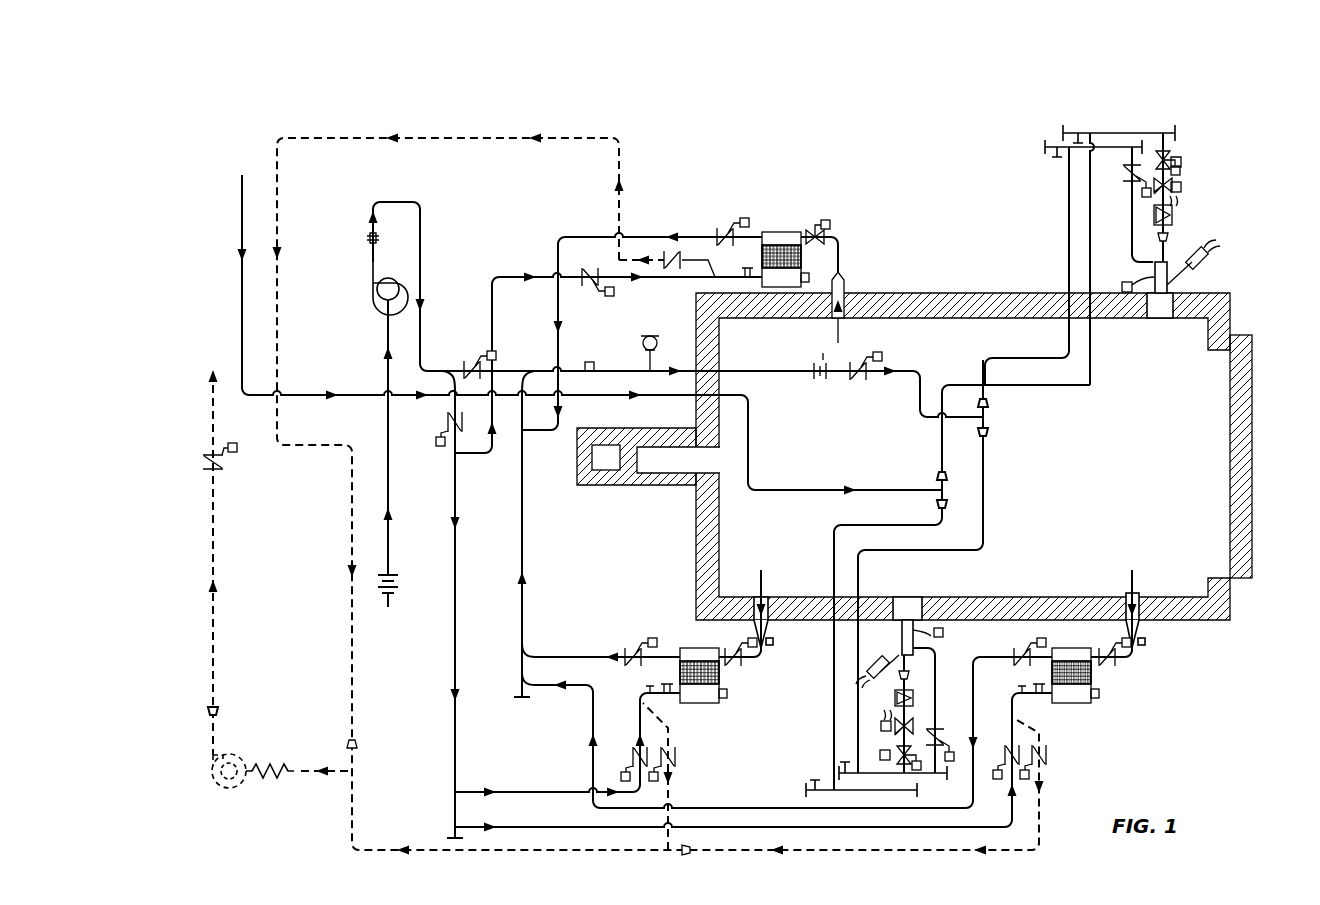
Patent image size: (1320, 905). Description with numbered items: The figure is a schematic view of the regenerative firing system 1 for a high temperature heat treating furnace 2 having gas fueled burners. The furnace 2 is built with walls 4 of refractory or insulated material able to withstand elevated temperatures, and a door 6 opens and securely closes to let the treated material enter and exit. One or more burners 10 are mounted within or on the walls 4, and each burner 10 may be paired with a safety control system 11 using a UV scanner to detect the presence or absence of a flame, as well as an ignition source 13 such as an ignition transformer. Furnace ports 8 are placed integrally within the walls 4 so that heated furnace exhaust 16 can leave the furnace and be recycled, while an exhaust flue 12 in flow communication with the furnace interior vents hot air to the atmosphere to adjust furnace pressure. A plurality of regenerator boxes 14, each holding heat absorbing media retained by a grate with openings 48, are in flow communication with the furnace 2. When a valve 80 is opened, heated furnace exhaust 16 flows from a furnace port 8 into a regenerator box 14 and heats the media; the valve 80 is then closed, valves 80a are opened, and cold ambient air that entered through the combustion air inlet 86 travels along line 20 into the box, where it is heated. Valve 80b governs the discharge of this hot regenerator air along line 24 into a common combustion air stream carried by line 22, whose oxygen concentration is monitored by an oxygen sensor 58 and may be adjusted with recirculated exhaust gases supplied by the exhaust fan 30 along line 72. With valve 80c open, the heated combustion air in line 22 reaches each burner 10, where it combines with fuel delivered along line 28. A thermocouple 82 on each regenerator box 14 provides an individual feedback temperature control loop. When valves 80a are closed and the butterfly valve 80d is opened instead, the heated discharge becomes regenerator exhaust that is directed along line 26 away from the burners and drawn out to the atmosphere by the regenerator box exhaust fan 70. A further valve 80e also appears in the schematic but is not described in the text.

The regenerative firing system 1 is at (814, 170).
The heat treating furnace 2 is at (939, 213).
The walls 4 is at (1232, 302).
The door 6 is at (1254, 408).
The furnace ports 8 is at (765, 600).
The burner 10 is at (1156, 333).
The safety control system 11 is at (1127, 284).
The exhaust flue 12 is at (603, 486).
The ignition source 13 is at (944, 638).
The regenerator box 14 is at (768, 232).
The heated furnace exhaust 16 is at (764, 656).
The line 20 is at (420, 230).
The line 22 is at (738, 370).
The line 24 is at (646, 236).
The line 26 is at (446, 138).
The fuel supply line 28 is at (242, 184).
The exhaust fan 30 is at (369, 299).
The openings 48 is at (786, 246).
The oxygen sensor 58 is at (641, 346).
The regenerator box exhaust fan 70 is at (238, 790).
The line 72 is at (219, 547).
The valve 80 is at (829, 229).
The valve 80a is at (592, 285).
The valve 80b is at (715, 230).
The valve 80c is at (1126, 170).
The butterfly valve 80d is at (692, 262).
The valve 80e is at (465, 364).
The temperature thermocouple 82 is at (586, 362).
The combustion air inlet 86 is at (386, 469).